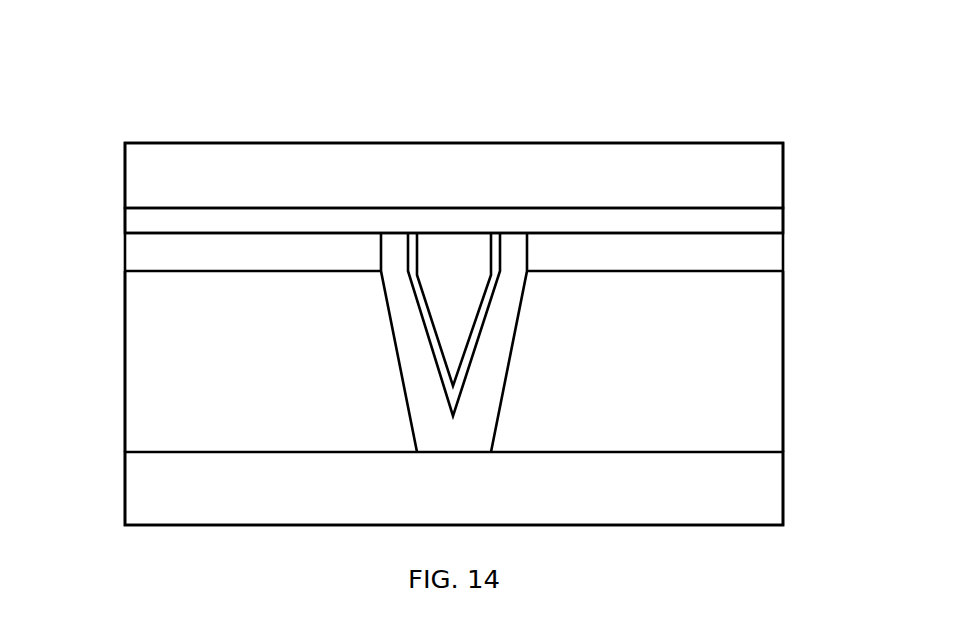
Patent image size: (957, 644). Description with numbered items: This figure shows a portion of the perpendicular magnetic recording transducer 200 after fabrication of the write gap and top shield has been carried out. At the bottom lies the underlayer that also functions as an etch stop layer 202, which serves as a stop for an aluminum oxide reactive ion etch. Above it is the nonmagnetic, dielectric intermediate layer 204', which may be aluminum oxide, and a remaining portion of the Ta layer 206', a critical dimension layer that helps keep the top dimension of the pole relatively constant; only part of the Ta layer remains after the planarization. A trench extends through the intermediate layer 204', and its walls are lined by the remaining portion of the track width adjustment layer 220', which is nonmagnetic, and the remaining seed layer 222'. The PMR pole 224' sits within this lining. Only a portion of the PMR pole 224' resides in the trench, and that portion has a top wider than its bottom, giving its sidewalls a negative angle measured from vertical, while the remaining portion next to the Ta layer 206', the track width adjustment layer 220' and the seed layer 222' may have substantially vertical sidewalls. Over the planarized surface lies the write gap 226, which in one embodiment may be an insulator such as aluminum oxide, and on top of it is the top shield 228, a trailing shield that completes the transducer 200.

The PMR transducer 200 is at (477, 83).
The etch stop layer 202 is at (783, 473).
The intermediate layer 204' is at (454, 361).
The Ta layer 206' is at (455, 239).
The track width adjustment layer 220' is at (412, 280).
The seed layer 222' is at (526, 262).
The PMR pole 224' is at (475, 247).
The write gap 226 is at (783, 215).
The top shield 228 is at (125, 178).